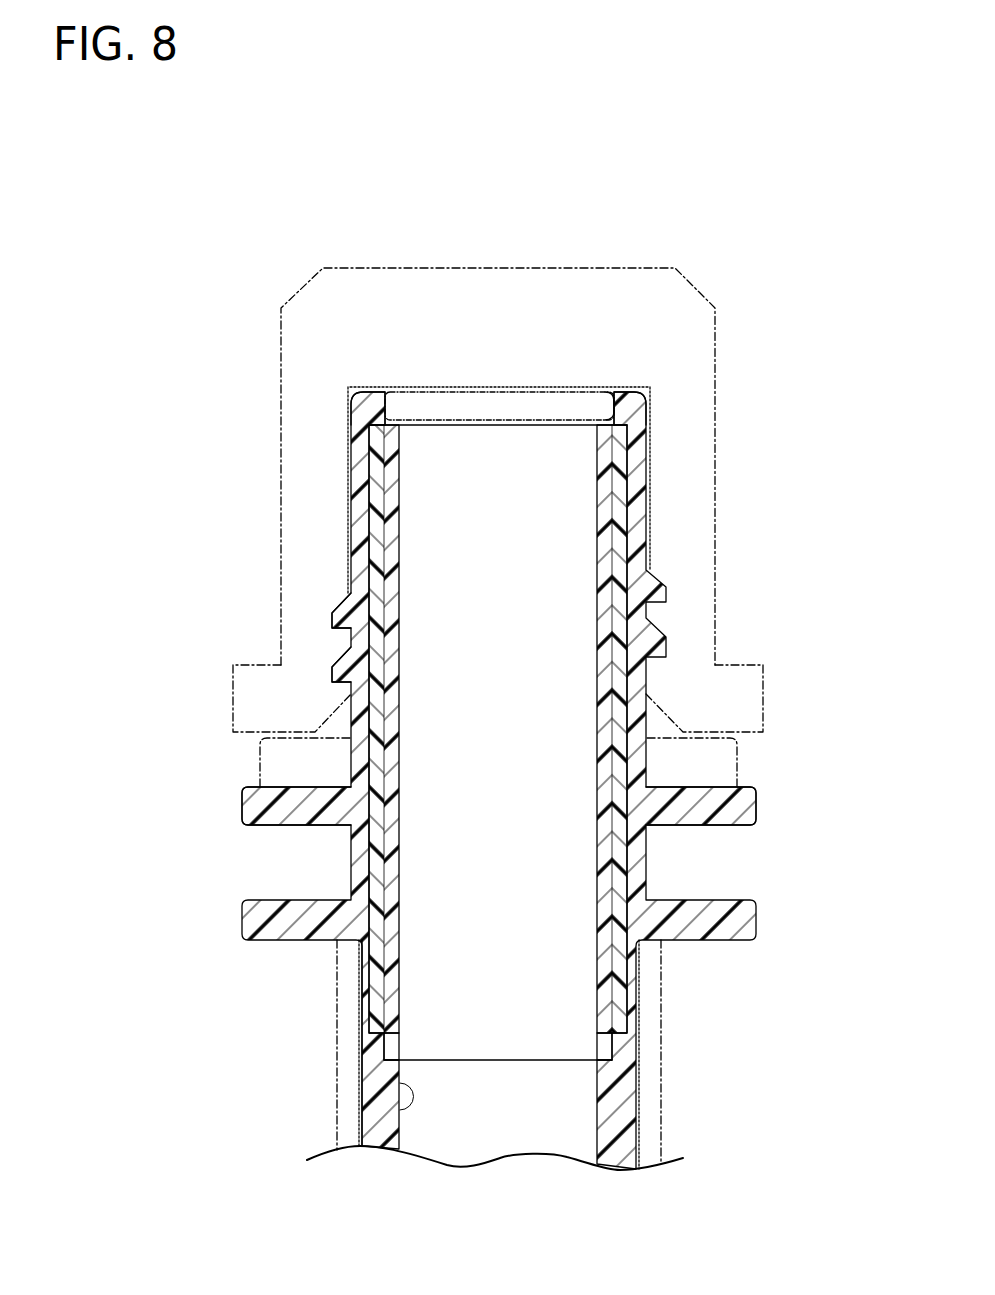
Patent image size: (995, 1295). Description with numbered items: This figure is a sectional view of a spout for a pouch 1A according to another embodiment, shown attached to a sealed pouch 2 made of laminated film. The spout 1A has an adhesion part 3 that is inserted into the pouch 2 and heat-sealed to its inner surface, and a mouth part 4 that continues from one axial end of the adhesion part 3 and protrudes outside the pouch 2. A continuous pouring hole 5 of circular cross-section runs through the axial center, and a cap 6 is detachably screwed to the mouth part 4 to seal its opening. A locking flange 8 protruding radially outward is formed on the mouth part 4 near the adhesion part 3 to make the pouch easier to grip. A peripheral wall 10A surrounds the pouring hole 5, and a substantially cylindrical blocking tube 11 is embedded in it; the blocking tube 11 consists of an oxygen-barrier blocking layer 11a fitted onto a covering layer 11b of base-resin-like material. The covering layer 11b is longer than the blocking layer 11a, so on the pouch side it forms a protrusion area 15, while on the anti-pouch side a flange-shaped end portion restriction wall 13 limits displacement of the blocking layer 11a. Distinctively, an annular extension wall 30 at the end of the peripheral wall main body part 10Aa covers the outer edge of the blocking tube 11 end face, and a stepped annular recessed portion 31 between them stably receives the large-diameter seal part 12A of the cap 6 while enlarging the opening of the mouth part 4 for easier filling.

The spout for a pouch 1A is at (660, 482).
The pouch 2 is at (662, 1035).
The adhesion part 3 is at (620, 1115).
The mouth part 4 is at (640, 704).
The pouring hole 5 is at (400, 1110).
The cap 6 is at (690, 288).
The locking flange 8 is at (742, 806).
The peripheral wall 10A is at (351, 527).
The peripheral wall main body part 10Aa is at (640, 532).
The blocking tube 11 is at (647, 465).
The blocking layer 11a is at (352, 610).
The covering layer 11b is at (395, 675).
The seal part 12A is at (502, 407).
The end portion restriction wall 13 is at (622, 438).
The protrusion area 15 is at (603, 1058).
The extension wall 30 is at (632, 393).
The annular recessed portion 31 is at (612, 407).